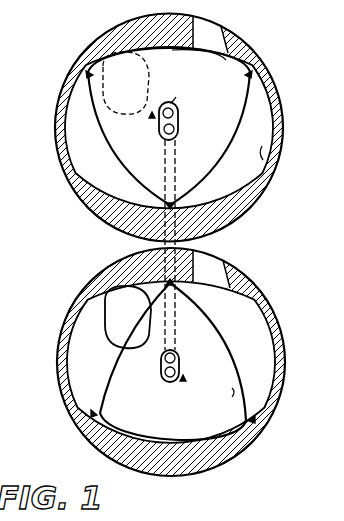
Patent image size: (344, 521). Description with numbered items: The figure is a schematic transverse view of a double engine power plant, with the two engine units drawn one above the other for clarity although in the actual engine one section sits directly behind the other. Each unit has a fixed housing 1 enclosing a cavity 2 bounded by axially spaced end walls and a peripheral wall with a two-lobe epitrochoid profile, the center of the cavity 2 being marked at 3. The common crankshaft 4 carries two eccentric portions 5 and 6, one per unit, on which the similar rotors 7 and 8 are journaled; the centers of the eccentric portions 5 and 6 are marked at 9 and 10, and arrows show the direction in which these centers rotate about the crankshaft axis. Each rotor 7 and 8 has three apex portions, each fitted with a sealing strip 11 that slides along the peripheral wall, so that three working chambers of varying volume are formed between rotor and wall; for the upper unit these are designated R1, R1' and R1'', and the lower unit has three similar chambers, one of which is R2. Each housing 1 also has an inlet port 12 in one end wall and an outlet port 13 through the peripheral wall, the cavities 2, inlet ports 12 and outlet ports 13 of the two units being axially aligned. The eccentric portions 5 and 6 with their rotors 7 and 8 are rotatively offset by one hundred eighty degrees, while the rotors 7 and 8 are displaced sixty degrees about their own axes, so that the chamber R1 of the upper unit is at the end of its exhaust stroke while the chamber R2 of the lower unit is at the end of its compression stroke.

The fixed housing 1 is at (282, 100).
The cavity 2 is at (262, 153).
The center of housing cavity 3 is at (163, 133).
The engine crankshaft 4 is at (167, 245).
The eccentric portion 5 is at (180, 115).
The eccentric portion 6 is at (162, 373).
The engine rotor 7 is at (222, 68).
The engine rotor 8 is at (235, 392).
The center of eccentric portion 9 is at (175, 93).
The center of eccentric portion 10 is at (183, 375).
The sealing strip 11 is at (92, 74).
The inlet port 12 is at (108, 100).
The outlet port 13 is at (212, 30).
The working chamber R1 is at (169, 40).
The working chamber R1' is at (96, 138).
The working chamber R1'' is at (231, 145).
The working chamber R2 is at (97, 440).